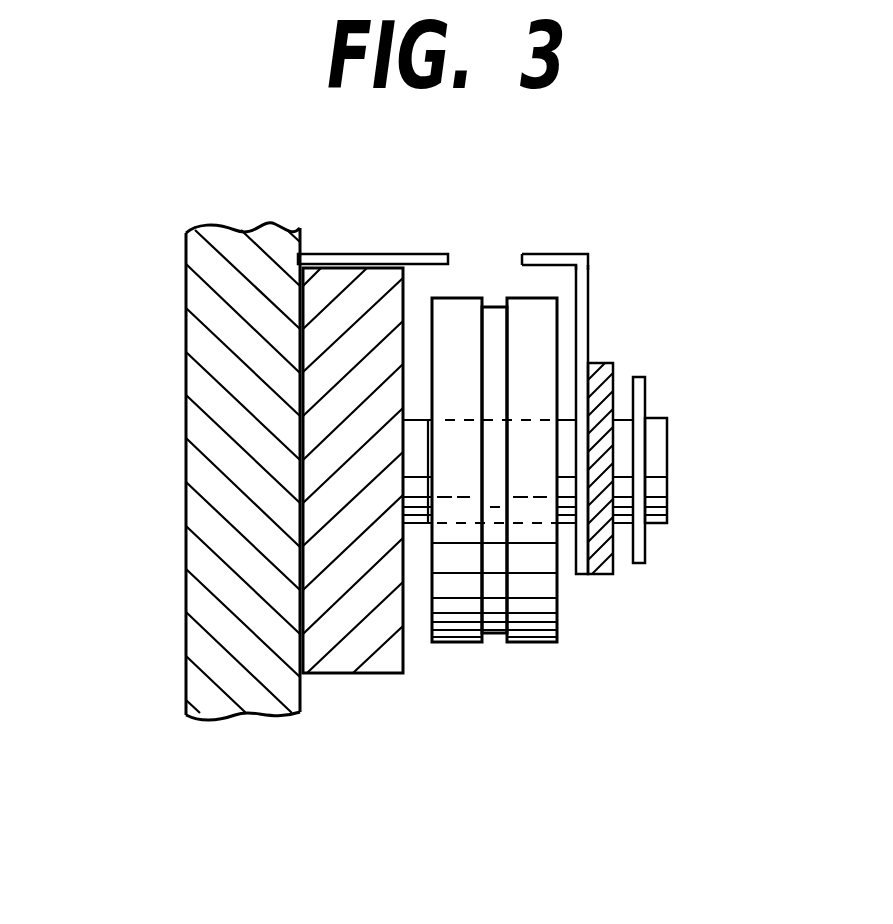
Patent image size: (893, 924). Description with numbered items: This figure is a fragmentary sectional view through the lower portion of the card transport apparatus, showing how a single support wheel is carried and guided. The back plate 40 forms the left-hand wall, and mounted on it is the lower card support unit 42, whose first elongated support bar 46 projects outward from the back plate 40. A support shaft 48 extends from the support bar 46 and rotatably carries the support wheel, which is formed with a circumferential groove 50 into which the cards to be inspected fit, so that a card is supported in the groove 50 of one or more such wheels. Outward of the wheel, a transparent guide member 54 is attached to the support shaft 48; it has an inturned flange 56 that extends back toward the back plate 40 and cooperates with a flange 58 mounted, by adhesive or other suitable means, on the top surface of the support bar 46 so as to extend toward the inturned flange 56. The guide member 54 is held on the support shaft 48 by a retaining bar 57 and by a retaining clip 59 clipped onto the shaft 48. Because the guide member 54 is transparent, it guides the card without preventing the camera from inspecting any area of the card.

The back plate 40 is at (185, 448).
The lower card support unit 42 is at (511, 708).
The first elongated support bar 46 is at (340, 673).
The support shaft 48 is at (667, 470).
The circumferential groove 50 is at (495, 307).
The transparent guide member 54 is at (588, 295).
The inturned flange 56 is at (580, 254).
The retaining bar 57 is at (603, 574).
The flange 58 is at (390, 254).
The retaining clips 59 is at (645, 547).